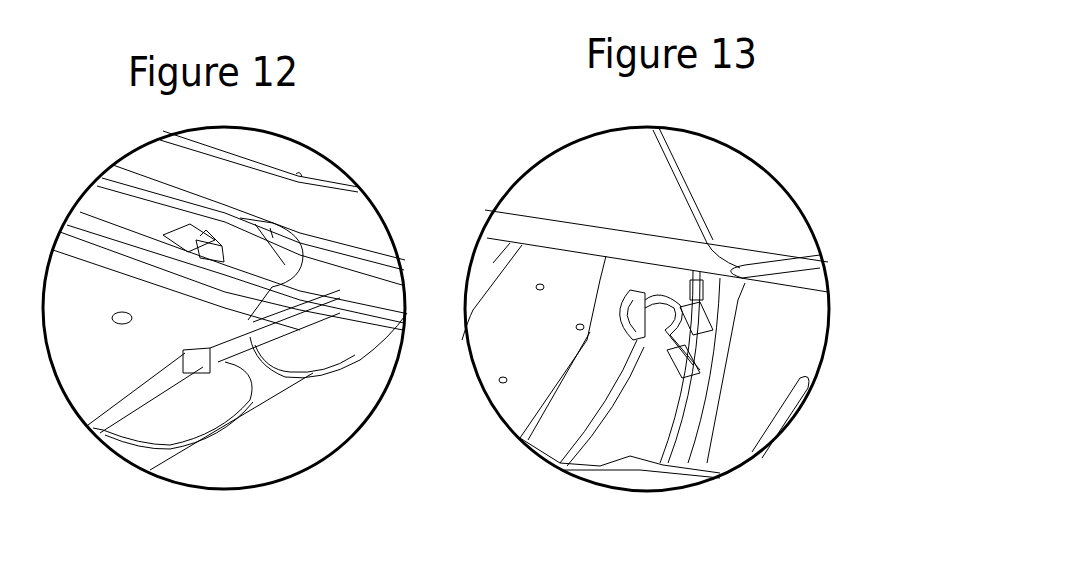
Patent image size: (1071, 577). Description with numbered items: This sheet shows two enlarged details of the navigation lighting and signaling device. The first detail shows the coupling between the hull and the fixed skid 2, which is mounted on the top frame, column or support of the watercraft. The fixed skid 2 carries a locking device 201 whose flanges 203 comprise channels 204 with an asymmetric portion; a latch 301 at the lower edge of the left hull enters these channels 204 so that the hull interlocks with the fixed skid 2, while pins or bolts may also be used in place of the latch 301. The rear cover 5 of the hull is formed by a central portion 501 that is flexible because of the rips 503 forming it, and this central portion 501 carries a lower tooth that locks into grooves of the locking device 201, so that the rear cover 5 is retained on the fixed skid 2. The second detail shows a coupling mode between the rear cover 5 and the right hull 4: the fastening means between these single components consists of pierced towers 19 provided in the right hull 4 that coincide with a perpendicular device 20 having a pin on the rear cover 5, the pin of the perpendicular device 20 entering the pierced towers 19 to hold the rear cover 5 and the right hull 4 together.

In FIG. 12, the fixed skid 2 is at (103, 393).
In FIG. 12, the rear cover 5 is at (360, 355).
In FIG. 13, the rear cover 5 is at (810, 297).
In FIG. 12, the locking device 201 is at (265, 398).
In FIG. 12, the flanges 203 is at (270, 267).
In FIG. 12, the channels 204 is at (183, 237).
In FIG. 12, the latch 301 is at (213, 250).
In FIG. 12, the central portion 501 is at (313, 373).
In FIG. 12, the rips 503 is at (318, 375).
In FIG. 13, the right hull 4 is at (577, 303).
In FIG. 13, the pierced towers 19 is at (640, 312).
In FIG. 13, the perpendicular device 20 is at (675, 326).